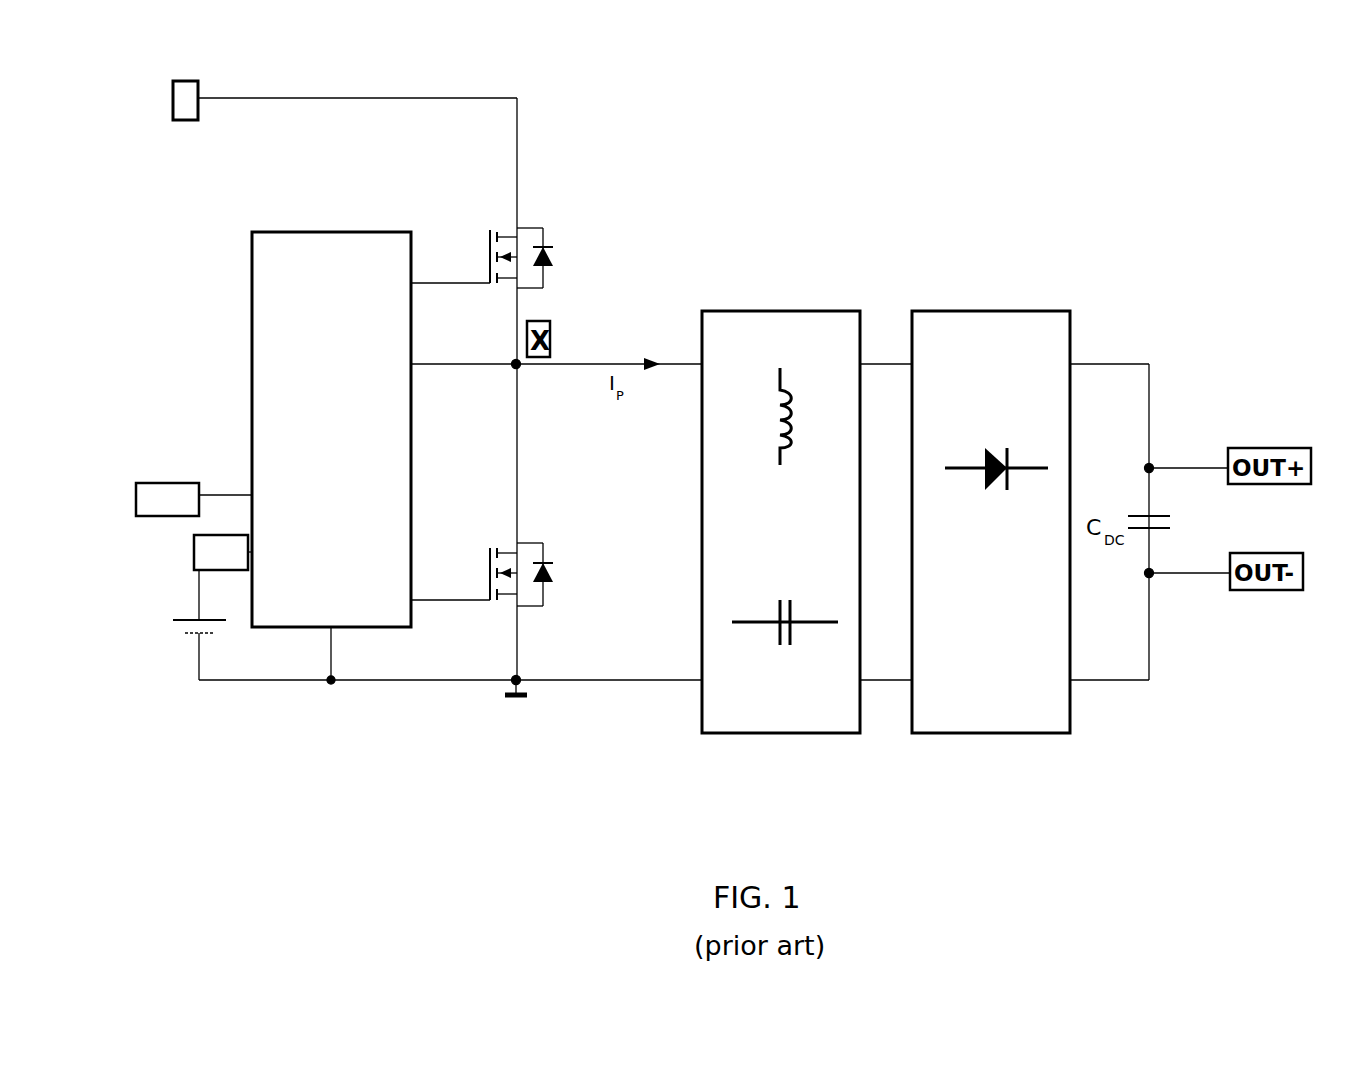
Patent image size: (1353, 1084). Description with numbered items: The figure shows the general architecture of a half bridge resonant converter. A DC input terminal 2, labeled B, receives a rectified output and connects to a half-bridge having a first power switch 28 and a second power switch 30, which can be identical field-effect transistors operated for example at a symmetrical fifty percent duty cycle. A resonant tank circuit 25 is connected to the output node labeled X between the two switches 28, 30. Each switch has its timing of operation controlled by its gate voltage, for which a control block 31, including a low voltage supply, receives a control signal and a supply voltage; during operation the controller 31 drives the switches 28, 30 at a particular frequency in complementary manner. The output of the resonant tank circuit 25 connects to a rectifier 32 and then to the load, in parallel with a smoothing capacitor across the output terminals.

The DC input terminal 2 is at (172, 90).
The control block 31 is at (258, 281).
The first power switch 28 is at (490, 258).
The second power switch 30 is at (490, 573).
The resonant tank circuit 25 is at (782, 311).
The rectifier 32 is at (992, 311).